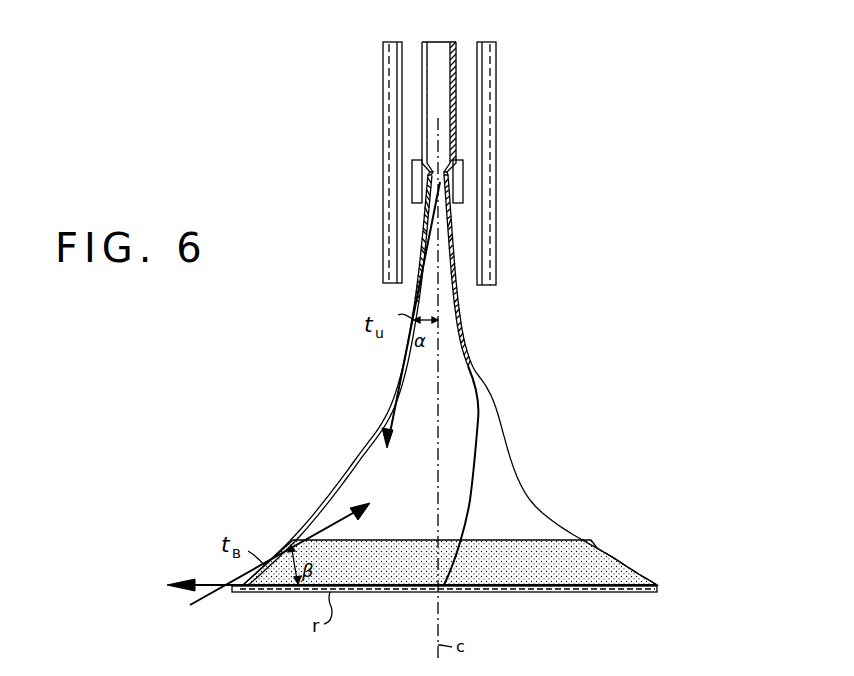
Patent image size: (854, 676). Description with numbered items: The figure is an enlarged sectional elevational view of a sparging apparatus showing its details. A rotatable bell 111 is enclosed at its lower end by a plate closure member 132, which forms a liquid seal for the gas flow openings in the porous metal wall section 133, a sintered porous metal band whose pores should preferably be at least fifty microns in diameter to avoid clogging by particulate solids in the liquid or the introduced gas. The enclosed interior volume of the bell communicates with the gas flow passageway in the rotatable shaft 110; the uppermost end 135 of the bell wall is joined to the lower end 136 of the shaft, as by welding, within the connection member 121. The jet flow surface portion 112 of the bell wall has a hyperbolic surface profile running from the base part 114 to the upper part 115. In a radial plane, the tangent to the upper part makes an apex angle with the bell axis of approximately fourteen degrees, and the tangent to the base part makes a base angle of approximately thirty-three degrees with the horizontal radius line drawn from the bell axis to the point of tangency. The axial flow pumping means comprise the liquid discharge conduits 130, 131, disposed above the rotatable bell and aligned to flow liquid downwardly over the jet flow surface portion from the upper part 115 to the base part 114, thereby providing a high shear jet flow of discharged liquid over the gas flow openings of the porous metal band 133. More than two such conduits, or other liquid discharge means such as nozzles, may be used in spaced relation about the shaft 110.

The rotatable shaft 110 is at (455, 107).
The liquid discharge conduit 130 is at (386, 121).
The liquid discharge conduit 131 is at (497, 156).
The connection member 121 is at (418, 203).
The uppermost end of the bell wall 135 is at (448, 179).
The lower end of the shaft 136 is at (450, 184).
The upper part of the jet flow surface portion 115 is at (467, 323).
The rotatable bell 111 is at (360, 450).
The jet flow surface portion 112 is at (515, 445).
The base part 114 is at (612, 560).
The plate closure member 132 is at (480, 590).
The porous metal wall section 133 is at (590, 588).